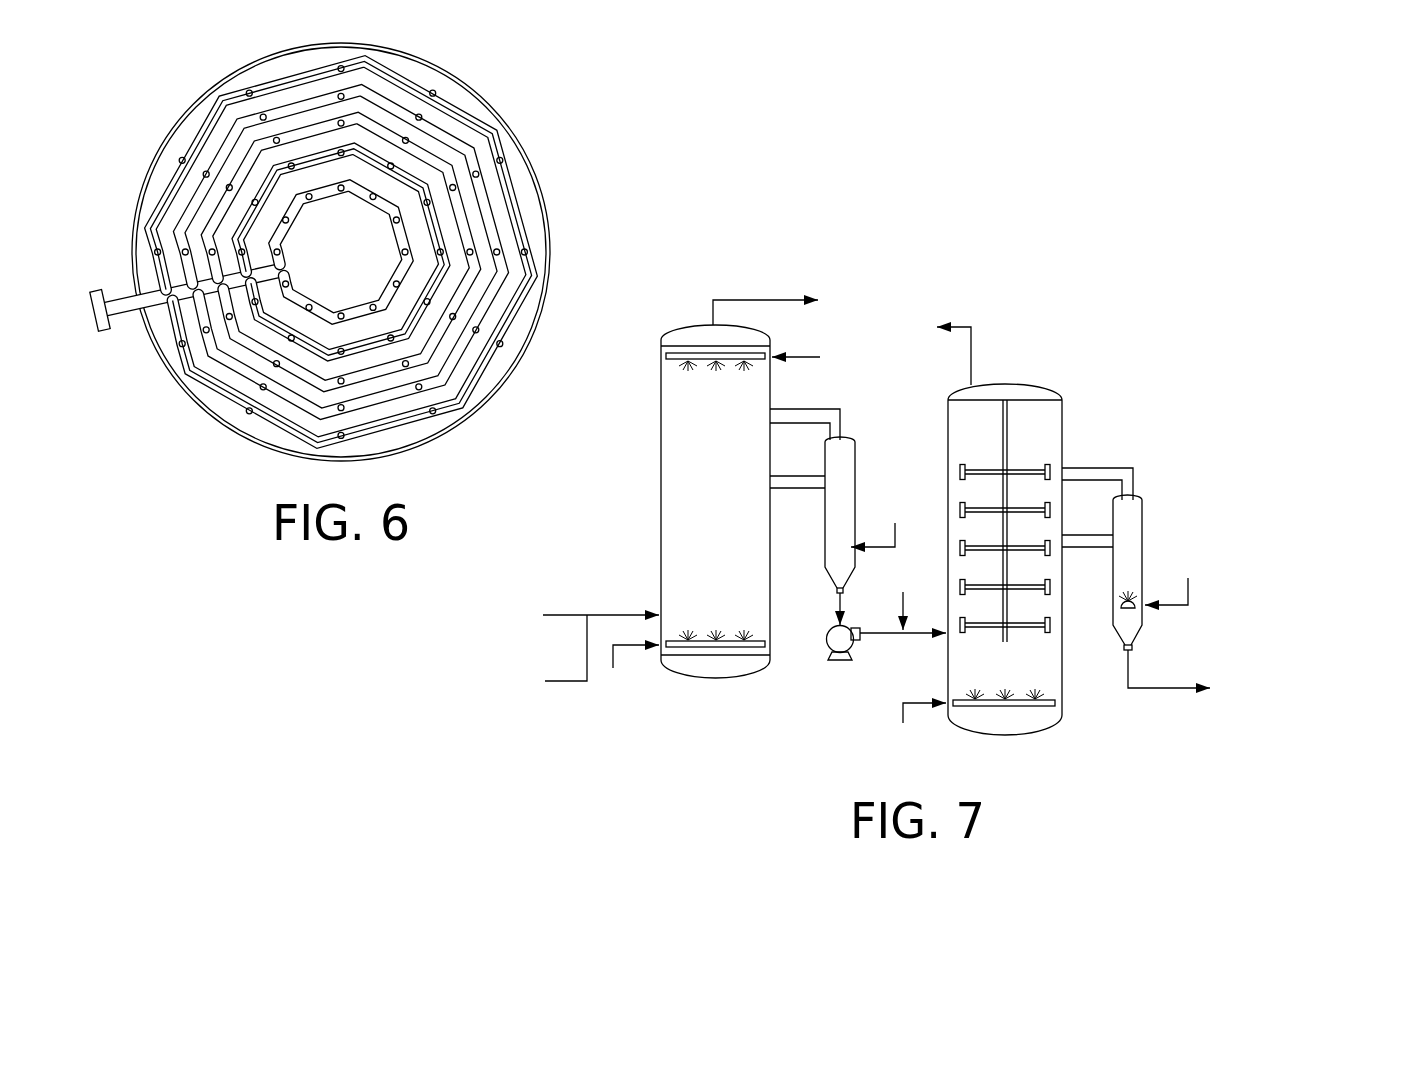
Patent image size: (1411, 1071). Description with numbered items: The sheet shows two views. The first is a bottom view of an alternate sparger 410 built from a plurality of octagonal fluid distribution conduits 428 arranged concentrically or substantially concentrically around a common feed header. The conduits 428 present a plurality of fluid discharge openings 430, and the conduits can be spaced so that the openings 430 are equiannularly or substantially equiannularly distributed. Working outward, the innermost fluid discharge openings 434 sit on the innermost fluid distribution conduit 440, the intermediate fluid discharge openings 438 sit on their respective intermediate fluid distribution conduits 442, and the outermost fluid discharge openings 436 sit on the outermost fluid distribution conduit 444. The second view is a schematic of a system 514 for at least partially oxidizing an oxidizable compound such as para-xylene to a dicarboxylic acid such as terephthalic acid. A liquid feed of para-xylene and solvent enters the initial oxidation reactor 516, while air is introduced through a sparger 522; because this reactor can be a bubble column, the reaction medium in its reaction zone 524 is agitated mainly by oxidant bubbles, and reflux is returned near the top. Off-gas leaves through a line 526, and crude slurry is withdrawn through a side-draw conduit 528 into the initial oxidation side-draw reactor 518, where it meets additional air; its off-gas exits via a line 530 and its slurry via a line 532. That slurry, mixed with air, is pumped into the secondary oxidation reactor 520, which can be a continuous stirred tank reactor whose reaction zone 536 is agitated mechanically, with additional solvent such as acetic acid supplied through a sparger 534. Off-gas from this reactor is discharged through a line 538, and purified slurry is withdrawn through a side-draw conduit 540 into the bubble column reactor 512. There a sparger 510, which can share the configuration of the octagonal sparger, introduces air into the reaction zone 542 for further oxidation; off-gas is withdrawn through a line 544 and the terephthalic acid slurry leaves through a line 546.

In FIG. 6, the sparger 410 is at (448, 98).
In FIG. 6, the octagonal fluid distribution conduits 428 is at (530, 300).
In FIG. 6, the fluid discharge openings 430 is at (527, 158).
In FIG. 6, the innermost fluid discharge openings 434 is at (400, 253).
In FIG. 6, the outermost fluid discharge openings 436 is at (498, 253).
In FIG. 6, the intermediate fluid discharge openings 438 is at (470, 252).
In FIG. 6, the innermost fluid distribution conduit 440 is at (380, 294).
In FIG. 6, the intermediate fluid distribution conduits 442 is at (412, 333).
In FIG. 6, the outermost fluid distribution conduit 444 is at (508, 340).
In FIG. 7, the sparger 510 is at (1132, 610).
In FIG. 7, the bubble column reactor 512 is at (1152, 558).
In FIG. 7, the system 514 is at (982, 275).
In FIG. 7, the initial oxidation reactor 516 is at (659, 425).
In FIG. 7, the initial oxidation side-draw reactor 518 is at (856, 497).
In FIG. 7, the secondary oxidation reactor 520 is at (1090, 405).
In FIG. 7, the sparger 522 is at (765, 644).
In FIG. 7, the reaction zone 524 is at (711, 540).
In FIG. 7, the line 526 is at (757, 300).
In FIG. 7, the side-draw conduit 528 is at (795, 481).
In FIG. 7, the line 530 is at (842, 419).
In FIG. 7, the line 532 is at (837, 590).
In FIG. 7, the sparger 534 is at (1062, 703).
In FIG. 7, the reaction zone 536 is at (1024, 450).
In FIG. 7, the line 538 is at (973, 350).
In FIG. 7, the side-draw conduit 540 is at (1087, 541).
In FIG. 7, the reaction zone 542 is at (1128, 532).
In FIG. 7, the line 544 is at (1136, 478).
In FIG. 7, the line 546 is at (1129, 660).